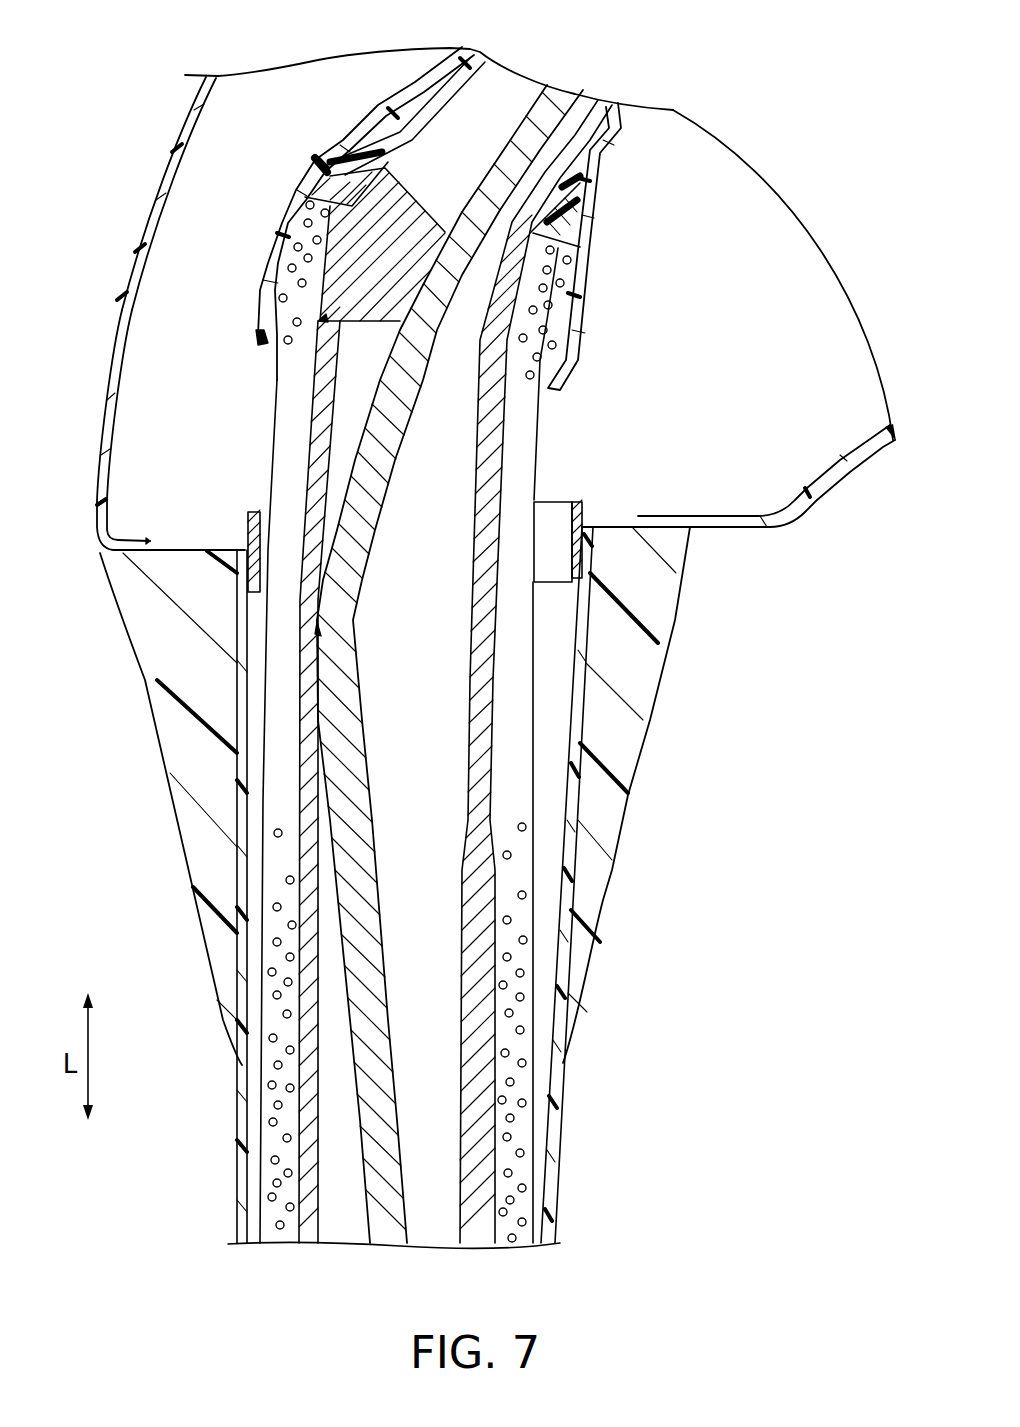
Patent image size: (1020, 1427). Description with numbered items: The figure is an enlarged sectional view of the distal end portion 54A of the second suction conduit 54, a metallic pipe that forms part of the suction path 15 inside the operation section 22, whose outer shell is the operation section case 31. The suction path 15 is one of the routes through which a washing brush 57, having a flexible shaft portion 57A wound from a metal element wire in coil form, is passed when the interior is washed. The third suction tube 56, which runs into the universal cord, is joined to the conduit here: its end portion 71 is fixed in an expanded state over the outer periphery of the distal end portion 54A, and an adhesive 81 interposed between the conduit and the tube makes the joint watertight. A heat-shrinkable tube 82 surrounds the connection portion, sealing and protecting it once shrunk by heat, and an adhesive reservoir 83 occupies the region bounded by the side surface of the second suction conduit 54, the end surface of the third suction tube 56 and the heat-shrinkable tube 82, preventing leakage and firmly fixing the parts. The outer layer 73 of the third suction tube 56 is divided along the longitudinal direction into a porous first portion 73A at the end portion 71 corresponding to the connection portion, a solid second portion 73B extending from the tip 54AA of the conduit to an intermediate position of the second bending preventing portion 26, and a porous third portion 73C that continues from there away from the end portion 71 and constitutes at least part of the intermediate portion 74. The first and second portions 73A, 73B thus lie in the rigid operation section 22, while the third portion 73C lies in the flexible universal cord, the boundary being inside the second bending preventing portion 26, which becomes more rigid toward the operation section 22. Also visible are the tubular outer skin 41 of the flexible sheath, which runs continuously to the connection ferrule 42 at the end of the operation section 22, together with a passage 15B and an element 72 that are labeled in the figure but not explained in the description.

The suction path 15 is at (493, 100).
The air passage 15B is at (343, 412).
The operation section 22 is at (128, 270).
The second bending preventing portion 26 is at (620, 771).
The operation section case 31 is at (110, 384).
The outer skin 41 is at (244, 1108).
The connection ferrule 42 is at (556, 500).
The second suction conduit 54 is at (530, 87).
The distal end portion 54A is at (377, 213).
The tip 54AA is at (468, 305).
The third suction tube 56 is at (537, 893).
The washing brush 57 is at (352, 600).
The shaft portion 57A is at (350, 662).
The end portion 71 is at (316, 180).
The sleeve 72 is at (322, 372).
The outer layer 73 is at (273, 713).
The first portion 73A is at (275, 190).
The second portion 73B is at (280, 487).
The third portion 73C is at (270, 1017).
The intermediate portion 74 is at (771, 372).
The adhesive 81 is at (336, 155).
The heat-shrinkable tube 82 is at (302, 188).
The adhesive reservoir 83 is at (370, 153).